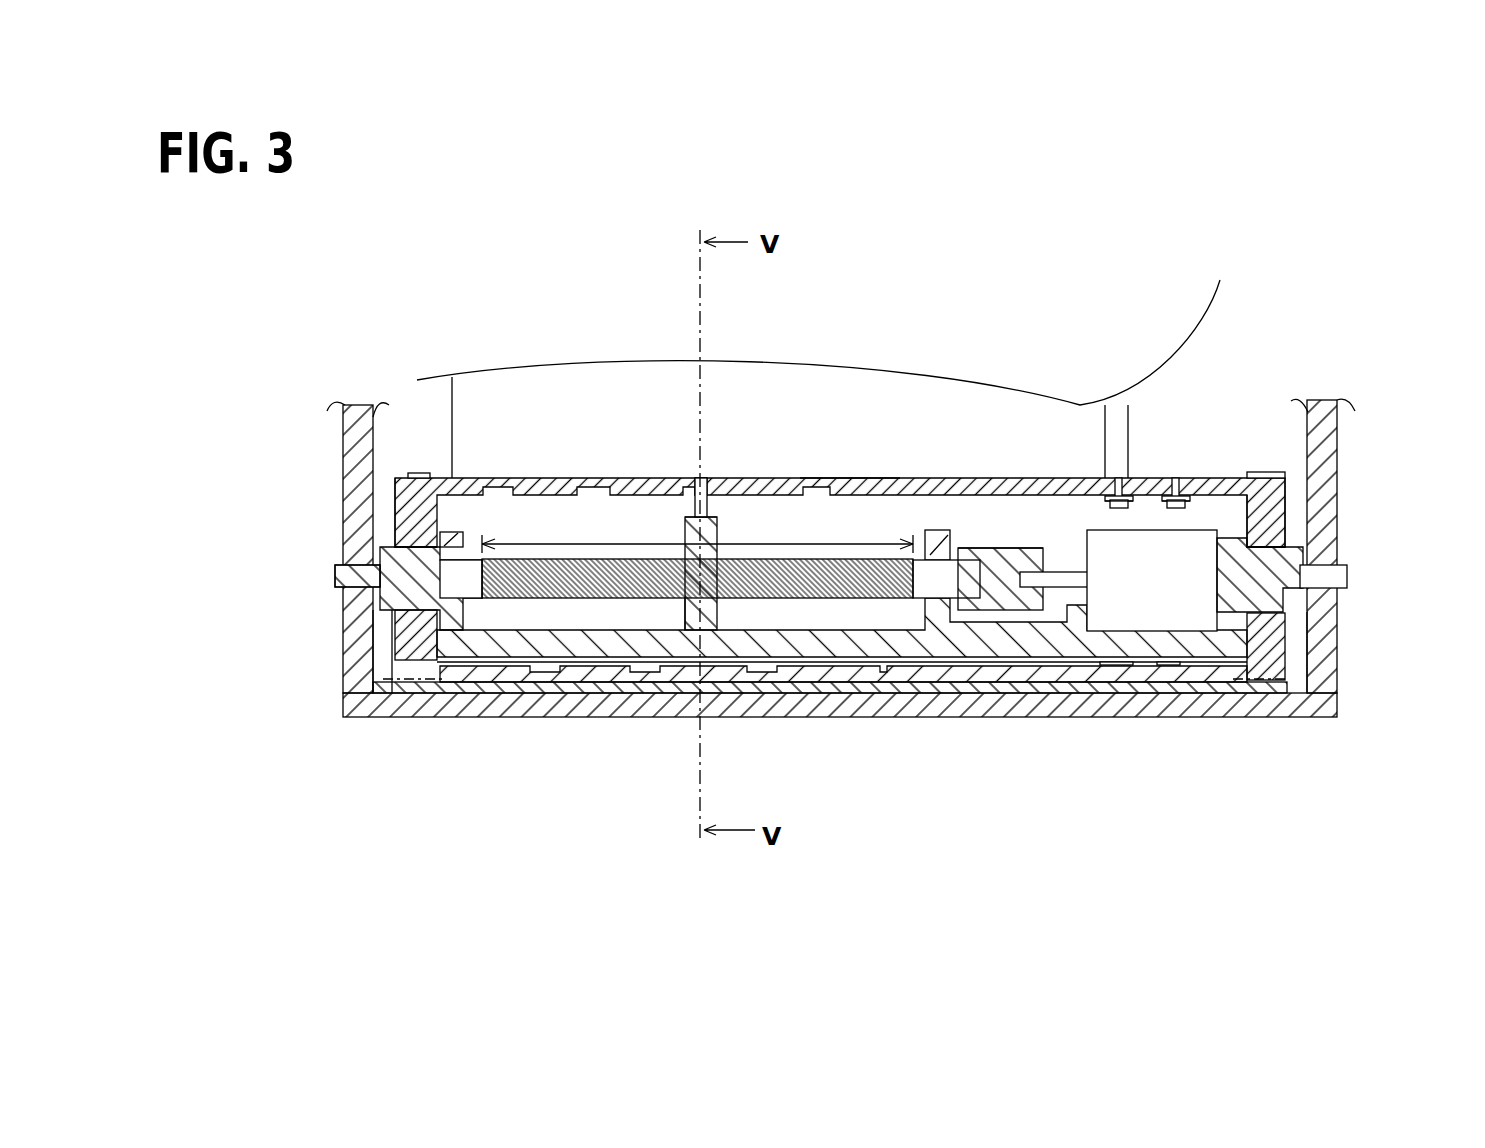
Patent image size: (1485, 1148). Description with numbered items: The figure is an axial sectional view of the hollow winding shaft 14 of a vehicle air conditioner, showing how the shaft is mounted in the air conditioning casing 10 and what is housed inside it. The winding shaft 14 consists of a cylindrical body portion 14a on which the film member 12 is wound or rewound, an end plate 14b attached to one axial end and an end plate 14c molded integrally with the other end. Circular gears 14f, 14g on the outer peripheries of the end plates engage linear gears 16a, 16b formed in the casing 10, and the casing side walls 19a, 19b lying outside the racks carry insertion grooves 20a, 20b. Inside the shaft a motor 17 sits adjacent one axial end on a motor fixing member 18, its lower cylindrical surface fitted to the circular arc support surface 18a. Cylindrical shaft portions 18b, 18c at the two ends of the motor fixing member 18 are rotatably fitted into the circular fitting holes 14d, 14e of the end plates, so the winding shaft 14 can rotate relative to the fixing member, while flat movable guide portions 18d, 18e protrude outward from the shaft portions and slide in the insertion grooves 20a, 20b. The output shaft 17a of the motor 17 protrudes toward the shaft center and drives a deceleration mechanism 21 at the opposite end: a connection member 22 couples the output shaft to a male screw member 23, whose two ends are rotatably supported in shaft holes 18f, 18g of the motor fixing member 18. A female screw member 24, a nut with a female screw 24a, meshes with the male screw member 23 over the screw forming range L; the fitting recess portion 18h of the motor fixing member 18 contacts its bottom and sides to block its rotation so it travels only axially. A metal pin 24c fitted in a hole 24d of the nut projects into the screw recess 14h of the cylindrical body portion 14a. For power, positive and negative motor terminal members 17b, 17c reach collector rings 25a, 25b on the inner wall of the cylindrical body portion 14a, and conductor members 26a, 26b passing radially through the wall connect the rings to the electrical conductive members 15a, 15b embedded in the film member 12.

The air conditioning casing 10 is at (1338, 467).
The film member 12 is at (898, 693).
The winding shaft 14 is at (873, 478).
The cylindrical body portion 14a is at (847, 478).
The end plate 14b is at (1280, 515).
The end plate 14c is at (395, 530).
The circular fitting hole 14d is at (1283, 640).
The circular fitting hole 14e is at (395, 680).
The circular gear 14f is at (1270, 472).
The circular gear 14g is at (415, 474).
The screw recess 14h is at (712, 490).
The electrical conductive member 15a is at (1187, 478).
The electrical conductive member 15b is at (1120, 500).
The linear gear 16a is at (1270, 718).
The linear gear 16b is at (445, 718).
The motor 17 is at (1097, 549).
The output shaft 17a is at (1000, 555).
The positive motor terminal member 17b is at (1267, 478).
The negative motor terminal member 17c is at (1057, 575).
The motor fixing member 18 is at (1035, 632).
The circular arc support surface 18a is at (1135, 640).
The cylindrical shaft portion 18b is at (1283, 552).
The cylindrical shaft portion 18c is at (392, 640).
The movable guide portion 18d is at (1347, 570).
The movable guide portion 18e is at (337, 576).
The shaft hole 18f is at (937, 530).
The shaft hole 18g is at (473, 483).
The fitting recess portion 18h is at (580, 663).
The side wall 19a is at (1337, 432).
The side wall 19b is at (343, 445).
The insertion groove 20a is at (1320, 613).
The insertion groove 20b is at (370, 610).
The deceleration mechanism 21 is at (723, 600).
The connection member 22 is at (1000, 605).
The male screw member 23 is at (840, 600).
The female screw member 24 is at (685, 620).
The female screw 24a is at (685, 605).
The pin 24c is at (695, 500).
The hole 24d is at (690, 525).
The positive collector ring 25a is at (1240, 480).
The negative collector ring 25b is at (1093, 497).
The conductor member 26a is at (1229, 478).
The conductor member 26b is at (1170, 492).